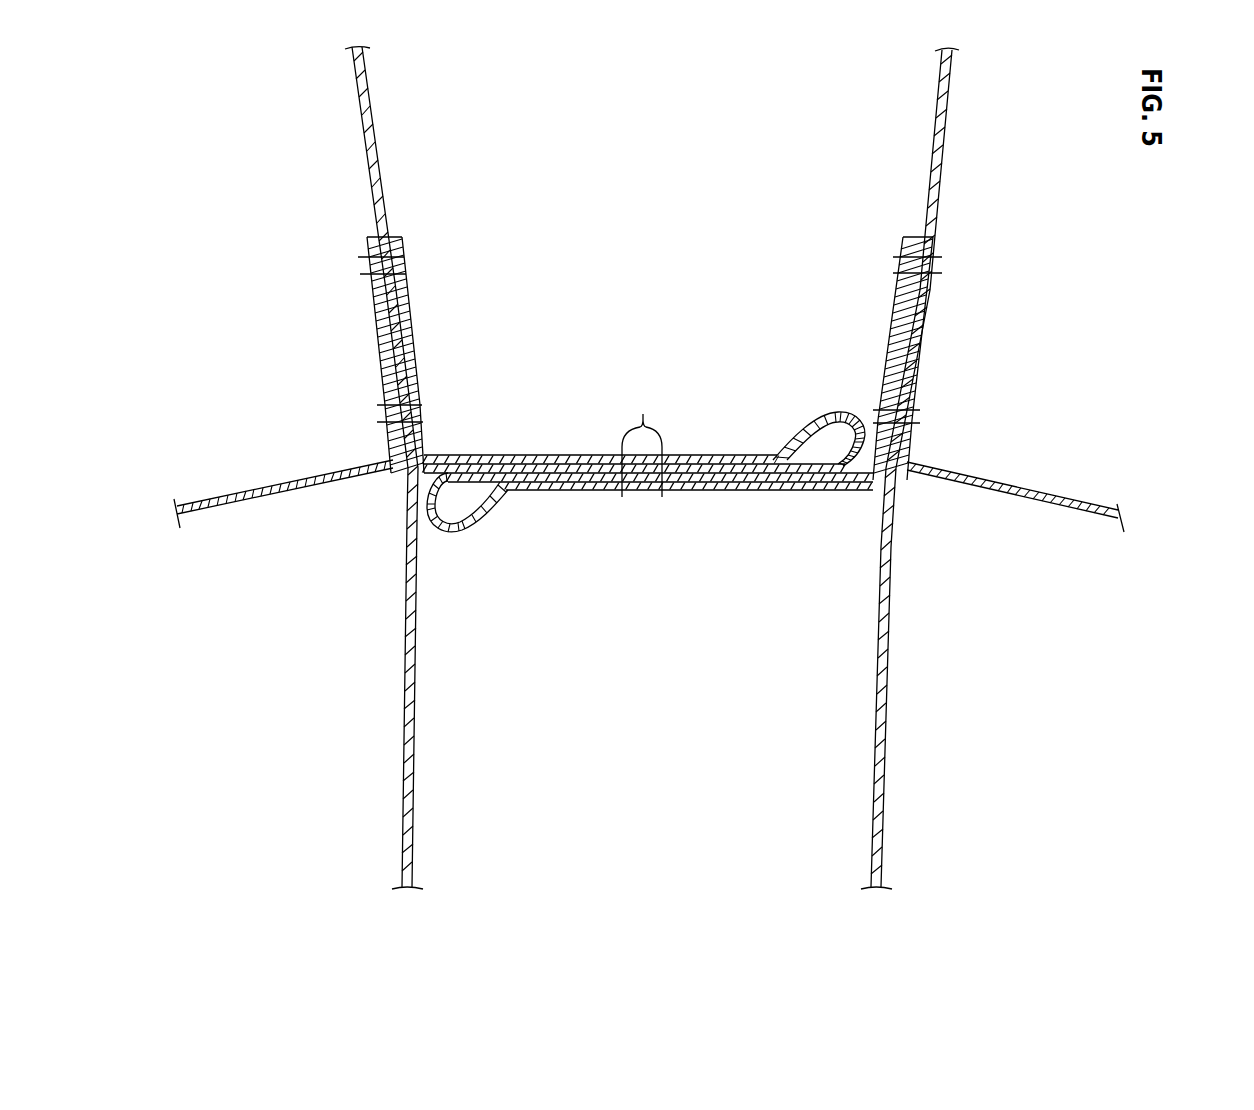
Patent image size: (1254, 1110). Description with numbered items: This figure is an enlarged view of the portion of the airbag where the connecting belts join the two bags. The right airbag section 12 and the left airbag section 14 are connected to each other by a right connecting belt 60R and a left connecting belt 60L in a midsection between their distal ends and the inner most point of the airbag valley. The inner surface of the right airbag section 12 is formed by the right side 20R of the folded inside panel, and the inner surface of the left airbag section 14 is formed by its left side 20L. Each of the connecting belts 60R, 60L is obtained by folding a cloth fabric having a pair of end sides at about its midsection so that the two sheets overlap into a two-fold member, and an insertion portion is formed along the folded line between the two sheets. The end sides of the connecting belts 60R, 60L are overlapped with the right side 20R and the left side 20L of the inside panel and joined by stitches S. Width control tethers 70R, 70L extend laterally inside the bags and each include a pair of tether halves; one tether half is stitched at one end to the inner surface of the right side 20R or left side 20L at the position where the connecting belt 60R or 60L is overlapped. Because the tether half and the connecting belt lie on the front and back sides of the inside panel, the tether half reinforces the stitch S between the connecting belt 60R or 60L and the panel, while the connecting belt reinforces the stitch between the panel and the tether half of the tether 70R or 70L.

The right airbag section 12 is at (278, 212).
The left airbag section 14 is at (1052, 216).
The right side of inside panel 20R is at (373, 137).
The left side of inside panel 20L is at (937, 113).
The right connecting belt 60R is at (620, 330).
The left connecting belt 60L is at (690, 377).
The stitch S is at (397, 252).
The right width control tether 70R is at (283, 440).
The left width control tether 70L is at (1071, 436).